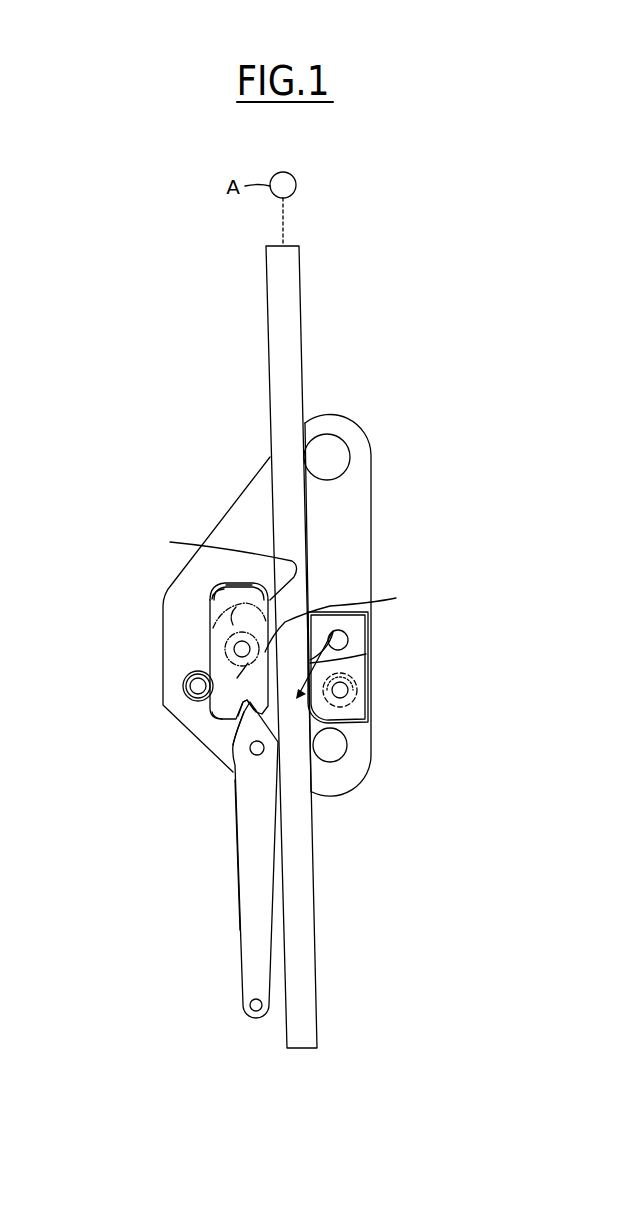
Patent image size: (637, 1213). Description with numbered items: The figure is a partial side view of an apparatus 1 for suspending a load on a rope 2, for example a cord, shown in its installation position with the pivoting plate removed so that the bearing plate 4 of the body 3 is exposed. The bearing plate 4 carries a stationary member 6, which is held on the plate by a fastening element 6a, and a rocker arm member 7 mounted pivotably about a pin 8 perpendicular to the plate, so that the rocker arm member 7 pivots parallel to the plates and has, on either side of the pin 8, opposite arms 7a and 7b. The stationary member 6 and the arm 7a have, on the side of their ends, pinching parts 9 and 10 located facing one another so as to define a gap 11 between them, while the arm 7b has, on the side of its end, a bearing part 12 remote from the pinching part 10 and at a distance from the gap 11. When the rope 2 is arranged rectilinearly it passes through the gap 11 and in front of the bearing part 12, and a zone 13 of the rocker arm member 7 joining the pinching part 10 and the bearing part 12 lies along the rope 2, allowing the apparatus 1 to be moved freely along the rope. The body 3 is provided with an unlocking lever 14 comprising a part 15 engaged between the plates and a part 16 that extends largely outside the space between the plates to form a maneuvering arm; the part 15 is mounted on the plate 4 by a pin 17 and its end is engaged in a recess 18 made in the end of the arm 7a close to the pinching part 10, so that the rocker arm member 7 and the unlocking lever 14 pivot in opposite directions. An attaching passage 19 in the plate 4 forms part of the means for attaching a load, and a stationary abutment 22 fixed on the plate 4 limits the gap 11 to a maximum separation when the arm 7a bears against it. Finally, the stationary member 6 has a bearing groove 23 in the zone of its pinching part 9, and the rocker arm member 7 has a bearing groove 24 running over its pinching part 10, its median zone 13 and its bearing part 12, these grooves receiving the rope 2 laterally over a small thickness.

The apparatus for suspending a load 1 is at (104, 590).
The rope 2 is at (266, 323).
The body 3 is at (214, 518).
The bearing plate 4 is at (362, 527).
The stationary member 6 is at (372, 670).
The fastening element 6a is at (348, 691).
The rocker arm member 7 is at (206, 642).
The arm 7a is at (210, 707).
The arm 7b is at (208, 630).
The pin 8 is at (240, 652).
The pinching part 9 is at (318, 742).
The pinching part 10 is at (348, 636).
The gap 11 is at (368, 665).
The bearing part 12 is at (220, 564).
The zone 13 is at (372, 603).
The unlocking lever 14 is at (236, 937).
The part 15 is at (250, 752).
The part 16 is at (234, 889).
The pin 17 is at (232, 772).
The recess 18 is at (228, 731).
The attaching passage 19 is at (347, 455).
The stationary abutment 22 is at (197, 685).
The bearing groove 23 is at (362, 710).
The bearing groove 24 is at (232, 582).